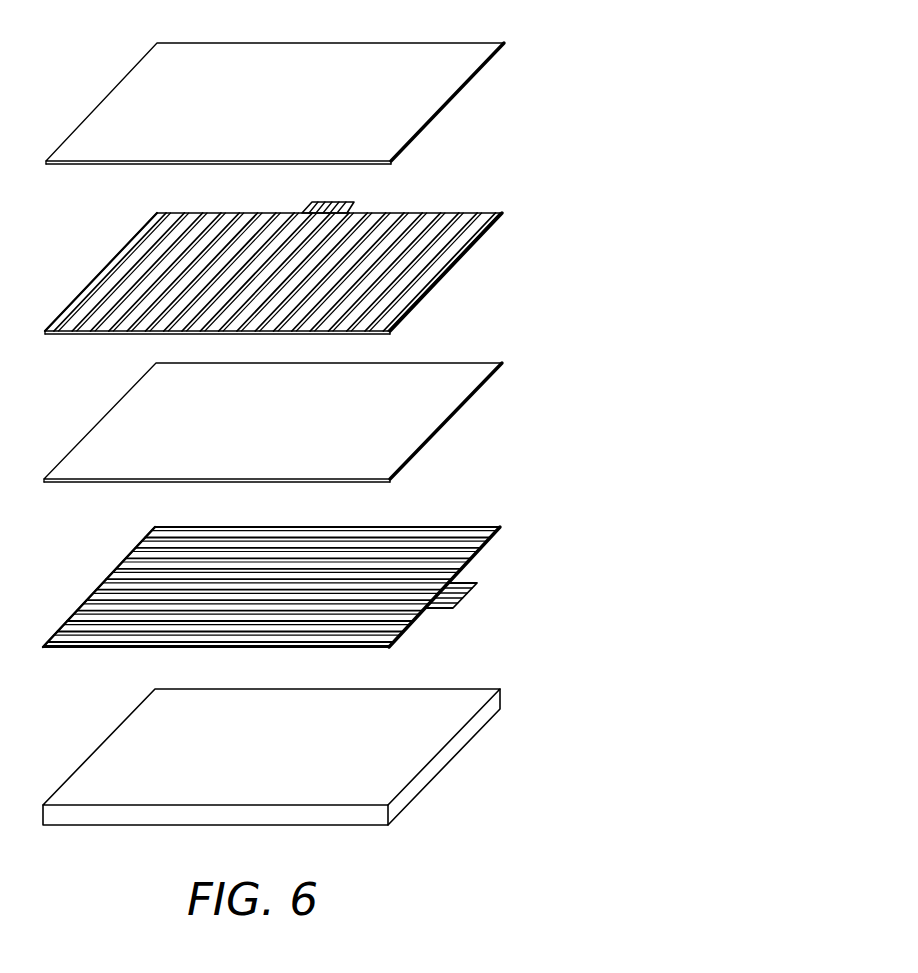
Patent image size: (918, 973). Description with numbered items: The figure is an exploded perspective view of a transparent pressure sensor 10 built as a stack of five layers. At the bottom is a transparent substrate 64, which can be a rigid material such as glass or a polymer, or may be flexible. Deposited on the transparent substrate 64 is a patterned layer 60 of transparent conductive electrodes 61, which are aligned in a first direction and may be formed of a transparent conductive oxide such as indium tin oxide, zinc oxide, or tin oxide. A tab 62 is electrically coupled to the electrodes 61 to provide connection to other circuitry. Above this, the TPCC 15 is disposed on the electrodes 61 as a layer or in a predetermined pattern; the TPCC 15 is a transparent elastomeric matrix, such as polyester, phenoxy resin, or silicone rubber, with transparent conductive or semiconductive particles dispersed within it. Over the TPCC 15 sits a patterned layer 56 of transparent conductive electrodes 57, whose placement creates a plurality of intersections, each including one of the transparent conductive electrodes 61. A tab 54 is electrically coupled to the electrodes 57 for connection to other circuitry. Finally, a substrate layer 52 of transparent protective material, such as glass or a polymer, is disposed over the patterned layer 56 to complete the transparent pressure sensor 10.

The transparent pressure sensor 10 is at (537, 53).
The substrate layer 52 is at (447, 94).
The tab 54 is at (343, 200).
The patterned layer 56 is at (273, 254).
The transparent conductive electrodes 57 is at (121, 263).
The TPCC 15 is at (441, 412).
The patterned layer 60 is at (277, 587).
The transparent conductive electrodes 61 is at (116, 579).
The tab 62 is at (466, 593).
The transparent substrate 64 is at (481, 689).